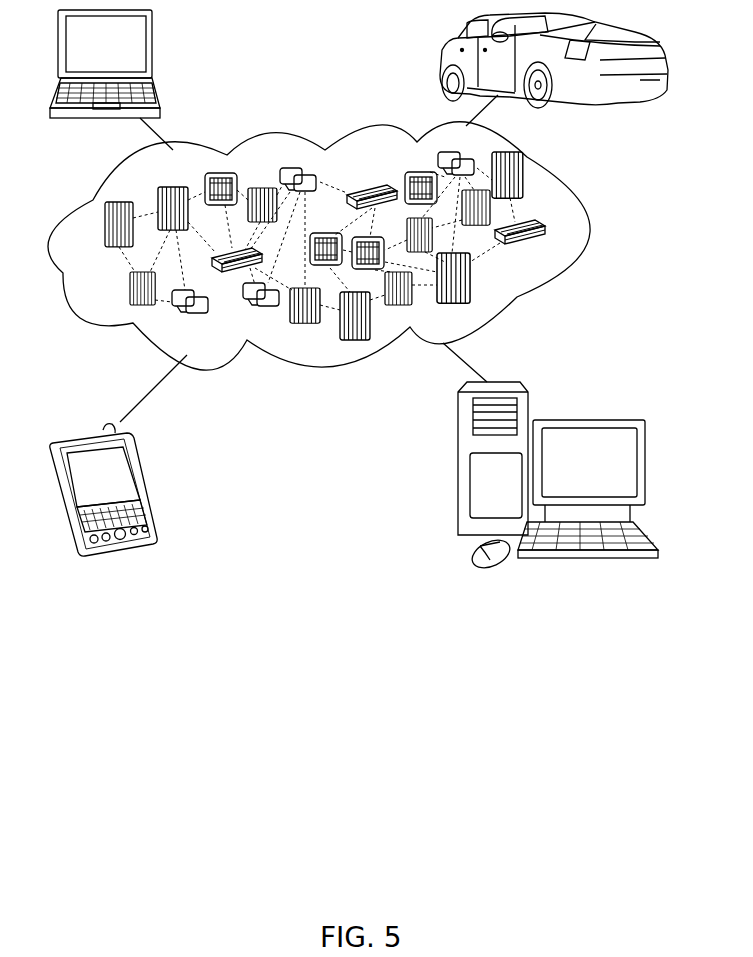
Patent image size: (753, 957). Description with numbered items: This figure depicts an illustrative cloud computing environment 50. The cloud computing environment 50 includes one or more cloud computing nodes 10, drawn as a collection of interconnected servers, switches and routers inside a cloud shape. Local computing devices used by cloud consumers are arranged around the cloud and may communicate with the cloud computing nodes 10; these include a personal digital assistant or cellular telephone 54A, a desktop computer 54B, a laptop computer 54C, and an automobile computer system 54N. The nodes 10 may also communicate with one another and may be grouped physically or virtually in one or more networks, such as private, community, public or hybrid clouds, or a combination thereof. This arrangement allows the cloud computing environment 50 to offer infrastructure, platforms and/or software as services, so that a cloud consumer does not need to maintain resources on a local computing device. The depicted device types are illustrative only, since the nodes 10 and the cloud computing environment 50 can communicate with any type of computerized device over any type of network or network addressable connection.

The cloud computing node 10 is at (547, 248).
The cloud computing environment 50 is at (585, 230).
The personal digital assistant or cellular telephone 54A is at (143, 482).
The desktop computer 54B is at (587, 420).
The laptop computer 54C is at (153, 50).
The automobile computer system 54N is at (443, 63).